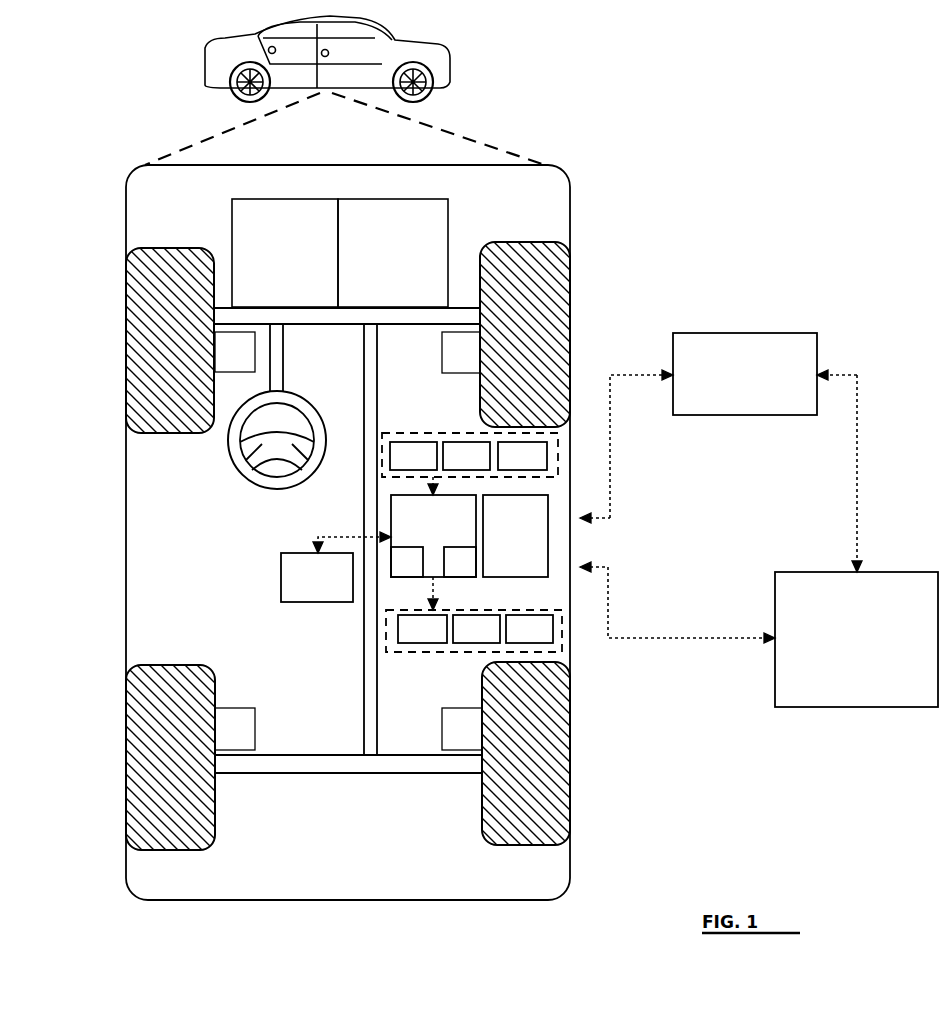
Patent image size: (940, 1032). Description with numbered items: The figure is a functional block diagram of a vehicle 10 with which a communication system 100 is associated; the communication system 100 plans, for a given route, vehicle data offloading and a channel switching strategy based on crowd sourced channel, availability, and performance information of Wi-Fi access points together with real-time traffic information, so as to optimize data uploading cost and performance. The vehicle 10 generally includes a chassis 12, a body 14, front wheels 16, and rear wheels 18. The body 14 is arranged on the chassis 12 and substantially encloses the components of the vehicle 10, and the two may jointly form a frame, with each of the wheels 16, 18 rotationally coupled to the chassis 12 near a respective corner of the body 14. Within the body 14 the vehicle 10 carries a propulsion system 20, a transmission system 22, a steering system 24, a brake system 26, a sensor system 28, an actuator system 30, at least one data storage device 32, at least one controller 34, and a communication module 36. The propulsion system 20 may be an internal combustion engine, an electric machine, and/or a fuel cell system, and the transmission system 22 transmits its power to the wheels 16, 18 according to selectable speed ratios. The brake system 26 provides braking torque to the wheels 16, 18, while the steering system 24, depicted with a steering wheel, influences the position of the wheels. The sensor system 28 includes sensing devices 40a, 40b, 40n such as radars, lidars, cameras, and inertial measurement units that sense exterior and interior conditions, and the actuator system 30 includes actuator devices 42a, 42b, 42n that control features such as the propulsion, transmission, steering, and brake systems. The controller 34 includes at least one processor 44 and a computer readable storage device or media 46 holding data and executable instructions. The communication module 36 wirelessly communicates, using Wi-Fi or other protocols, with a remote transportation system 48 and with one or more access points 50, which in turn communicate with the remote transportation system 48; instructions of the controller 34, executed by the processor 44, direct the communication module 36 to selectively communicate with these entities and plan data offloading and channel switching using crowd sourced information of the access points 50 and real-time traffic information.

The vehicle 10 is at (202, 78).
The communication system 100 is at (594, 174).
The chassis 12 is at (364, 692).
The body 14 is at (125, 518).
The front wheels 16 is at (170, 248).
The rear wheels 18 is at (190, 850).
The propulsion system 20 is at (274, 263).
The transmission system 22 is at (382, 263).
The steering system 24 is at (308, 349).
The brake system 26 is at (224, 362).
The sensor system 28 is at (396, 433).
The actuator system 30 is at (432, 652).
The data storage device 32 is at (306, 588).
The controller 34 is at (422, 541).
The communication module 36 is at (504, 547).
The sensing device 40a is at (429, 466).
The sensing device 40b is at (451, 466).
The sensing device 40n is at (506, 466).
The actuator device 42a is at (406, 639).
The actuator device 42b is at (460, 639).
The actuator device 42n is at (513, 639).
The processor 44 is at (396, 572).
The computer readable storage device or media 46 is at (449, 572).
The remote transportation system 48 is at (845, 650).
The access points 50 is at (734, 385).